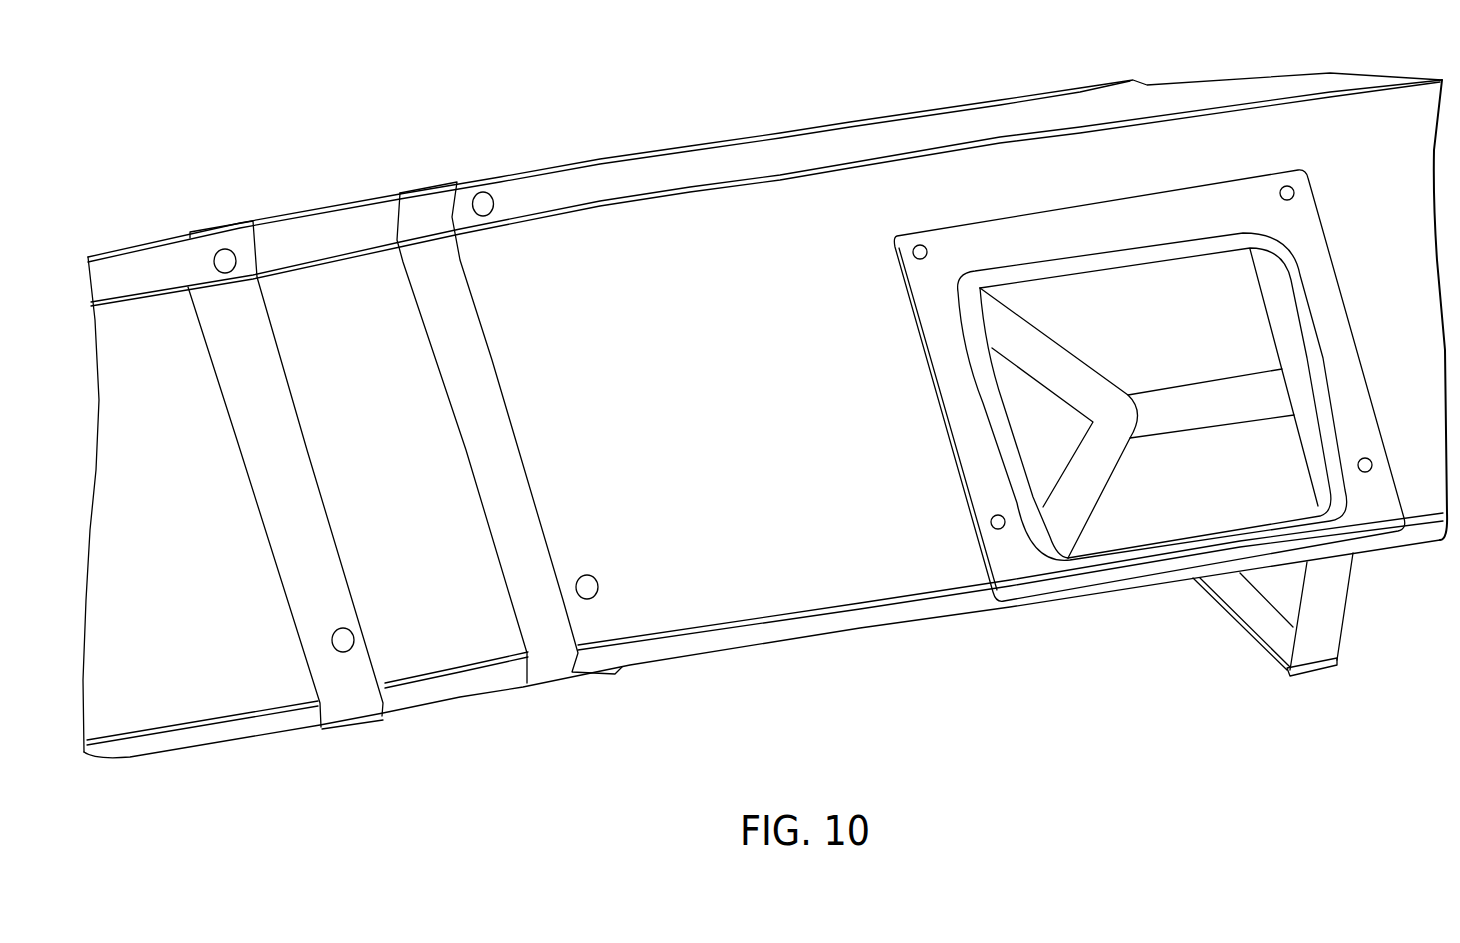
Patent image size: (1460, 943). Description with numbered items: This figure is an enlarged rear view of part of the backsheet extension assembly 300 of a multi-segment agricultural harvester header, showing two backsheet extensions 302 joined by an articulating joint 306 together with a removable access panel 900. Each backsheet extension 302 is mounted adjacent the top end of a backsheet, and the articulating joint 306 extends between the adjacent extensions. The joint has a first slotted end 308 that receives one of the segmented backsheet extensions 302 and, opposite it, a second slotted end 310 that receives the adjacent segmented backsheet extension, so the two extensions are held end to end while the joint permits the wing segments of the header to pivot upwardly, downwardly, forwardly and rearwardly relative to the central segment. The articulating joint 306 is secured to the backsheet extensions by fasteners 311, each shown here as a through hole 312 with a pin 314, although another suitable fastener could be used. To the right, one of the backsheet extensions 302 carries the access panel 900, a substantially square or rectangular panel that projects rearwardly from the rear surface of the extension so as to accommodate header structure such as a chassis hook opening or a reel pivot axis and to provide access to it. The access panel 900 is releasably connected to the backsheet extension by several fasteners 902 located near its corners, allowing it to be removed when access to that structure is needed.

The backsheet extension assembly 300 is at (555, 72).
The backsheet extension 302 is at (725, 135).
The articulating joint 306 is at (319, 217).
The first slotted end 308 is at (484, 400).
The second slotted end 310 is at (270, 403).
The fastener 311 is at (188, 249).
The through hole 312 is at (207, 270).
The pin 314 is at (227, 257).
The access panel 900 is at (1113, 594).
The fastener 902 is at (915, 247).